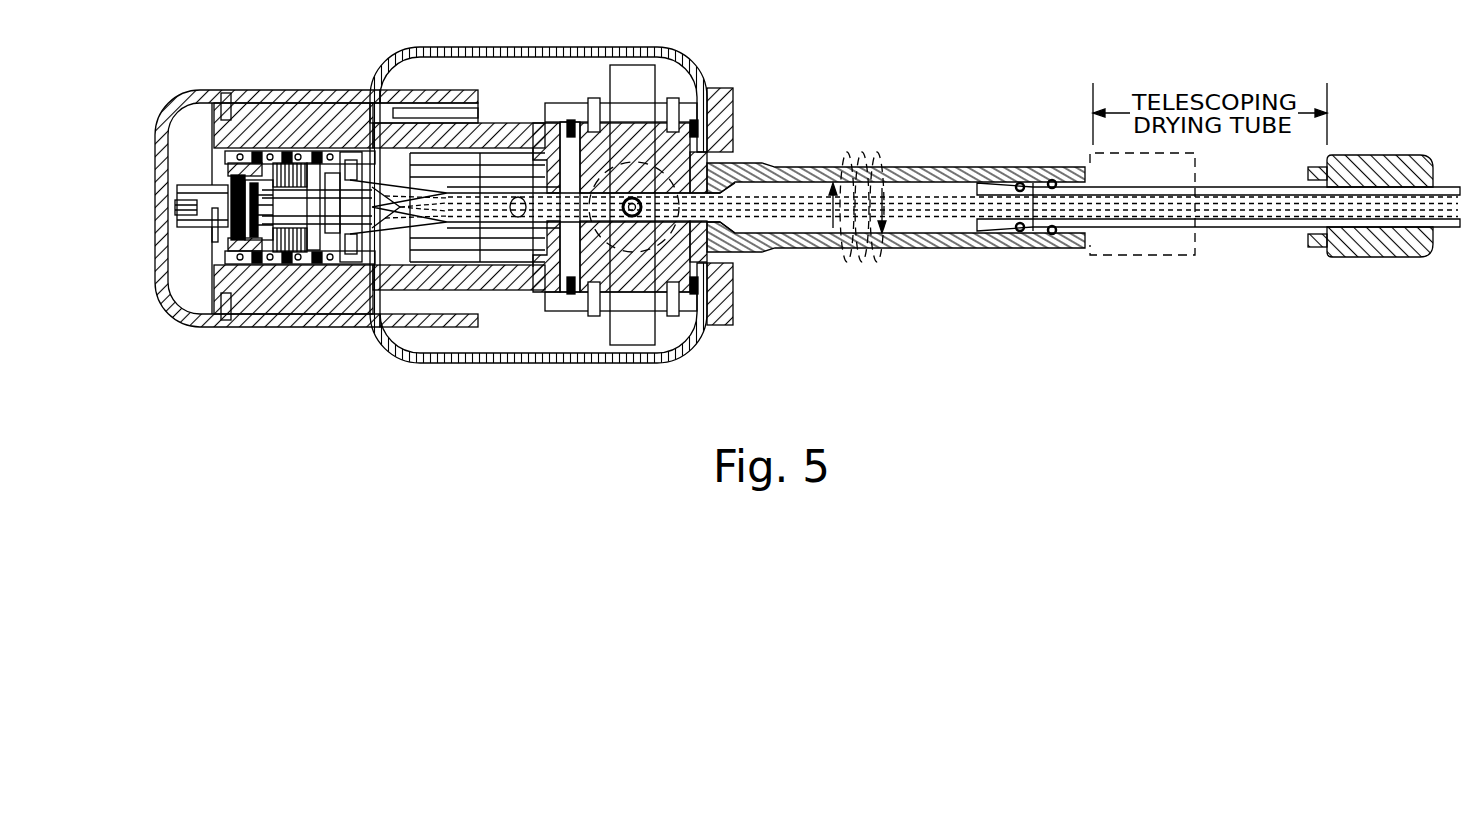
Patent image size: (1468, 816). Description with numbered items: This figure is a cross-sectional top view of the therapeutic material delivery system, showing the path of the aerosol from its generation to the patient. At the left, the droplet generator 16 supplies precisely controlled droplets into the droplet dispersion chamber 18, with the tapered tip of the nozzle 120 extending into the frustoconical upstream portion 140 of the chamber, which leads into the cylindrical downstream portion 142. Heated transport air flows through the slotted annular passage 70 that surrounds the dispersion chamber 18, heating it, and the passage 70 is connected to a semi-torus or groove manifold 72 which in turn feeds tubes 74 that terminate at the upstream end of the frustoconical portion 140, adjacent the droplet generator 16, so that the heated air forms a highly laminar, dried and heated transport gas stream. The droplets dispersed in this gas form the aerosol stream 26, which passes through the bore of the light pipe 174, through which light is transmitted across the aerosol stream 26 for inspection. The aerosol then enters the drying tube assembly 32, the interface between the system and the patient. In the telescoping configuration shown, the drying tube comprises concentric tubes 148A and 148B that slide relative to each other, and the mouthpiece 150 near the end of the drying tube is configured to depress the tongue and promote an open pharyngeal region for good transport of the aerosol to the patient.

The droplet generator 16 is at (222, 168).
The droplet dispersion chamber 18 is at (503, 177).
The aerosol stream 26 is at (517, 190).
The drying tube assembly 32 is at (912, 145).
The slotted annular passage 70 is at (486, 163).
The groove manifold 72 is at (352, 131).
The tubes 74 is at (348, 157).
The nozzle 120 is at (405, 145).
The frustoconical upstream portion 140 is at (415, 218).
The cylindrical downstream portion 142 is at (527, 222).
The concentric tube 148A is at (918, 247).
The concentric tube 148B is at (1158, 228).
The mouthpiece 150 is at (1387, 258).
The light pipe 174 is at (635, 65).